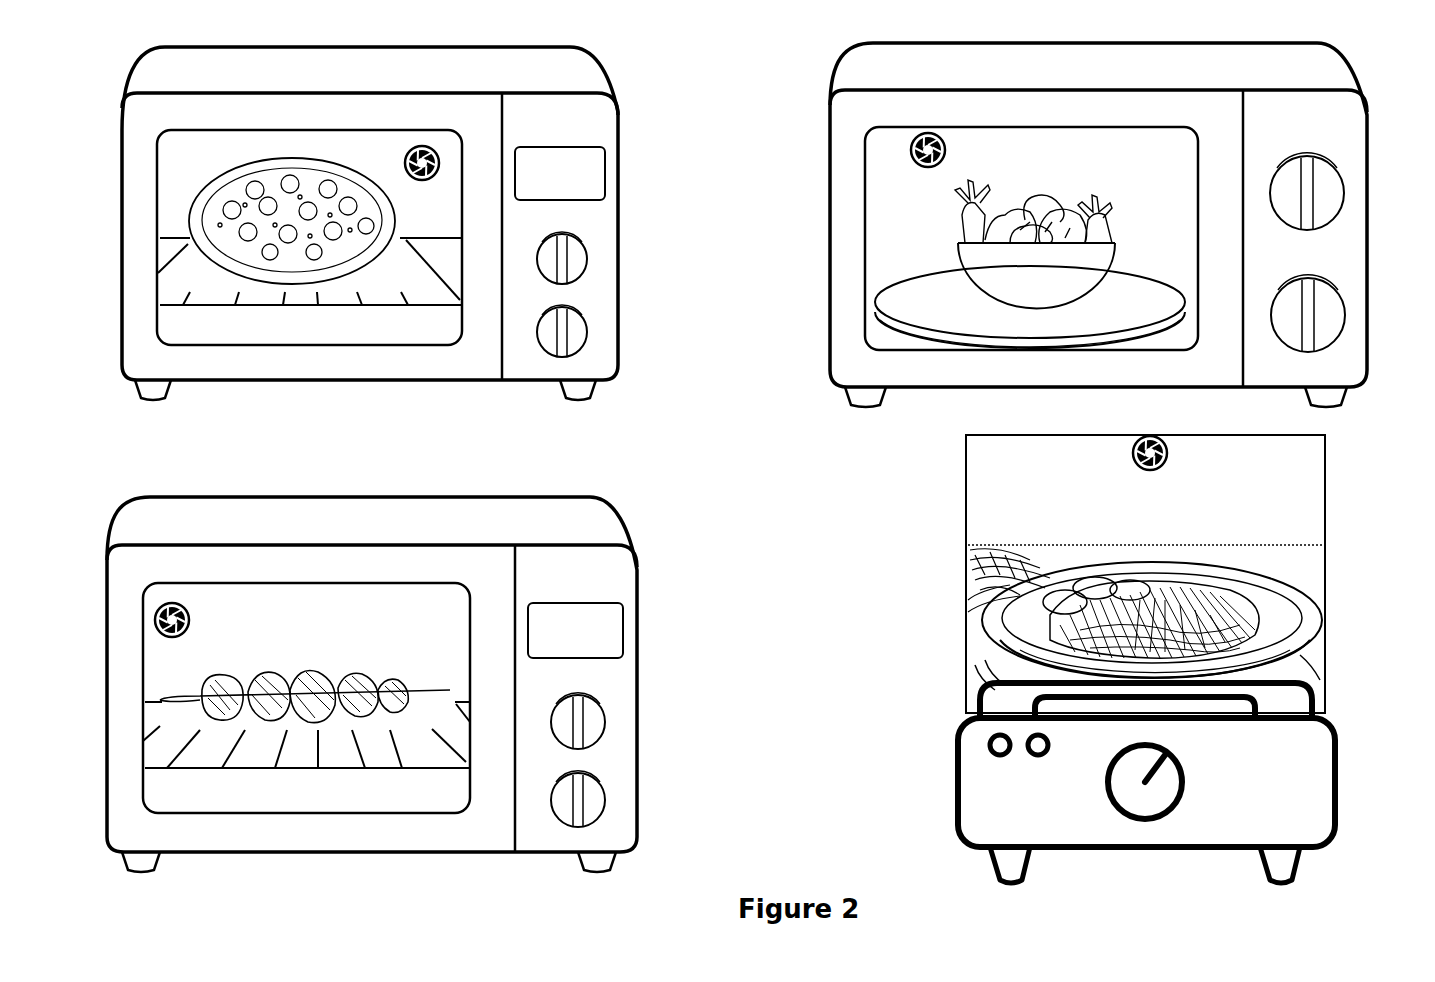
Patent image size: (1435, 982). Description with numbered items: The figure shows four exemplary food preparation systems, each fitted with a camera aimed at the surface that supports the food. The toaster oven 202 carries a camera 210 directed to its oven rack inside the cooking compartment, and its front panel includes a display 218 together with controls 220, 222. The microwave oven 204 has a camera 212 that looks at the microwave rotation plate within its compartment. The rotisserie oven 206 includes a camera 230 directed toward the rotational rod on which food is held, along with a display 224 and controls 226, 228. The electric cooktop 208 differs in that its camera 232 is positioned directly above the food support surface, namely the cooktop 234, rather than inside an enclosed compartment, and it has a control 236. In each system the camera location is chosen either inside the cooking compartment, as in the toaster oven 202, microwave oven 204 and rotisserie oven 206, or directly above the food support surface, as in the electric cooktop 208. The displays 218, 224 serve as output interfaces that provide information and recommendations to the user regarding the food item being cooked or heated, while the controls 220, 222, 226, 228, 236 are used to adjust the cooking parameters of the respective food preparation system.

The toaster oven 202 is at (596, 81).
The microwave oven 204 is at (1348, 78).
The rotisserie oven 206 is at (620, 532).
The electric cooktop 208 is at (1326, 498).
The camera 210 is at (431, 152).
The camera 212 is at (948, 166).
The display 218 is at (590, 168).
The control 220 is at (575, 264).
The control 222 is at (575, 335).
The display 224 is at (605, 624).
The control 226 is at (590, 722).
The control 228 is at (590, 792).
The camera 230 is at (183, 605).
The camera 232 is at (1168, 462).
The cooktop 234 is at (1327, 641).
The control 236 is at (1190, 784).